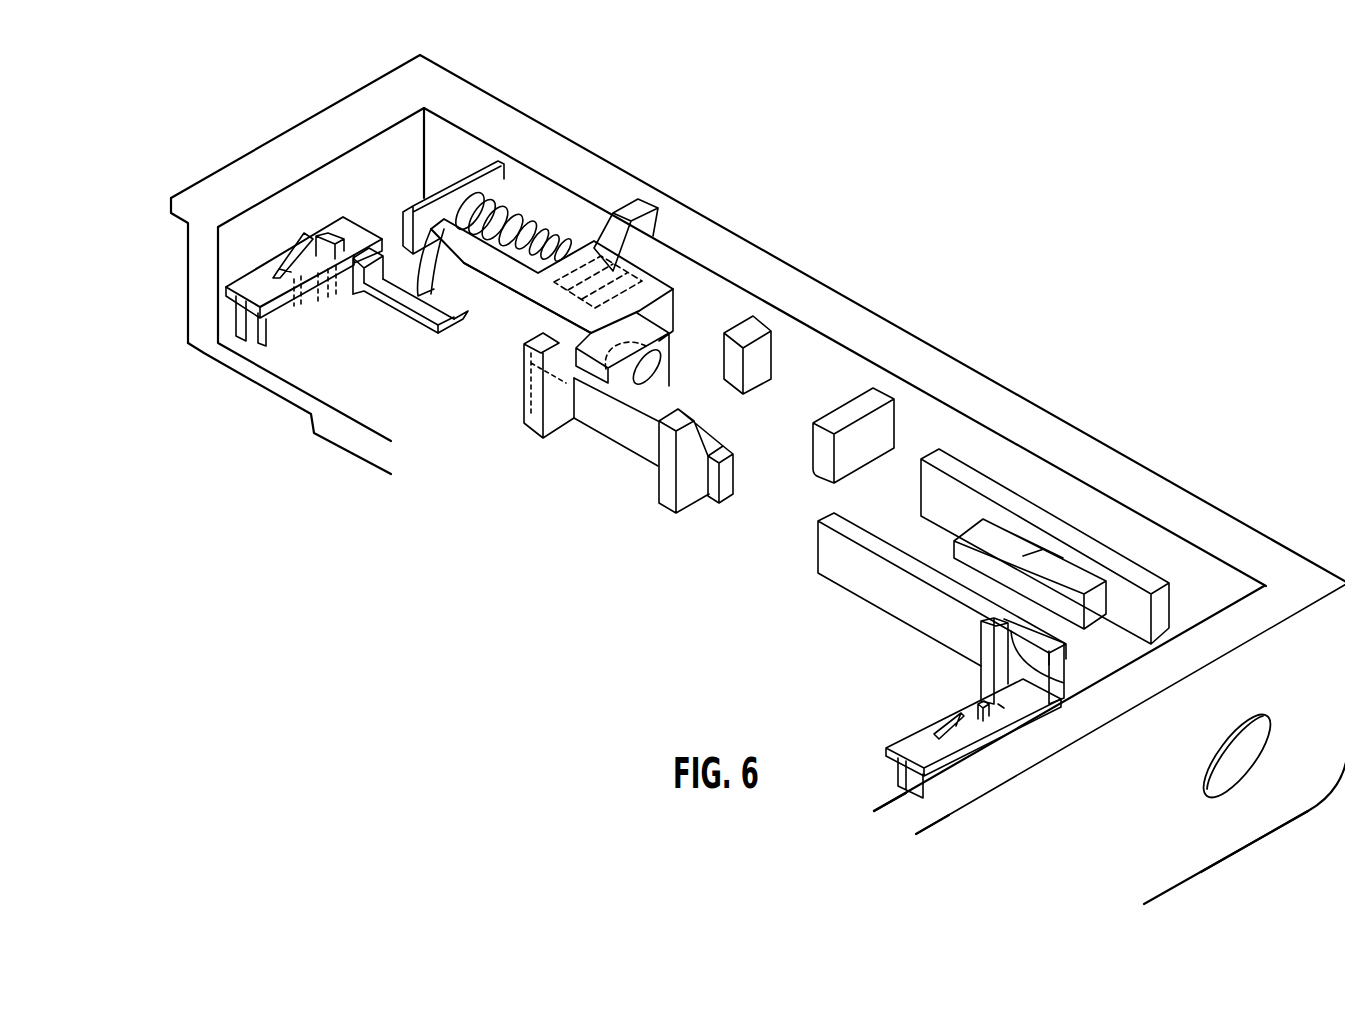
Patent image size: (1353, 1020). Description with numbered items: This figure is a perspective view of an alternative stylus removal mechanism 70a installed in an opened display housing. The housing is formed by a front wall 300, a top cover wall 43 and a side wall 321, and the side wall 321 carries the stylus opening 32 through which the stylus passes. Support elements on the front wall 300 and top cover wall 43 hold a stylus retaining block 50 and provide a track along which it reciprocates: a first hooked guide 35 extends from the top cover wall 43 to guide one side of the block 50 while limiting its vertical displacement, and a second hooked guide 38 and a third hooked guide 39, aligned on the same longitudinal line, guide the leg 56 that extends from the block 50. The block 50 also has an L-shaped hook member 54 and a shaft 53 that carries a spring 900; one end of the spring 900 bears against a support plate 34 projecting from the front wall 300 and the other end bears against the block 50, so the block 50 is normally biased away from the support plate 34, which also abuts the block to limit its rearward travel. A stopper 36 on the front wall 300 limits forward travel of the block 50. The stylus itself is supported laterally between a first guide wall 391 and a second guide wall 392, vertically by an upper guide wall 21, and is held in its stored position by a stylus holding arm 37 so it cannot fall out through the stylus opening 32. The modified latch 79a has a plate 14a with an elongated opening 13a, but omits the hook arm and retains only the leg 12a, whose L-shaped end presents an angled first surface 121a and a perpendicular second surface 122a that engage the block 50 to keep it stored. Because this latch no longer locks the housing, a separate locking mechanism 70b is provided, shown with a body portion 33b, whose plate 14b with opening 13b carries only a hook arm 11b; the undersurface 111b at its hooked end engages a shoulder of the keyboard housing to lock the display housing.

The front wall 300 is at (1050, 433).
The top cover wall 43 is at (210, 350).
The stylus opening 32 is at (1252, 708).
The side wall 321 is at (1250, 820).
The slot in housing 33b is at (907, 782).
The support plate 34 is at (497, 160).
The bias or resilient element 900 is at (507, 208).
The stylus retaining block 50 is at (667, 280).
The L-shaped hook member 54 is at (517, 278).
The shaft 53 is at (573, 237).
The first hooked guide 35 is at (643, 207).
The stylus removal mechanism 70a is at (262, 245).
The plate 14a is at (225, 287).
The elongated opening 13a is at (307, 248).
The modified latch 79a is at (367, 305).
The leg 12a is at (440, 317).
The second surface 122a is at (413, 318).
The angled first surface 121a is at (457, 317).
The third hooked guide 39 is at (558, 420).
The leg 56 is at (622, 430).
The second hooked guide 38 is at (688, 492).
The stopper 36 is at (763, 353).
The stylus holding arm 37 is at (880, 395).
The first guide wall 391 is at (960, 473).
The second guide wall 392 is at (832, 556).
The upper guide wall 21 is at (1073, 565).
The locking mechanism 70b is at (925, 705).
The plate 14b is at (887, 757).
The elongated opening 13b is at (960, 727).
The hook arm 11b is at (995, 656).
The undersurface 111b is at (1067, 683).